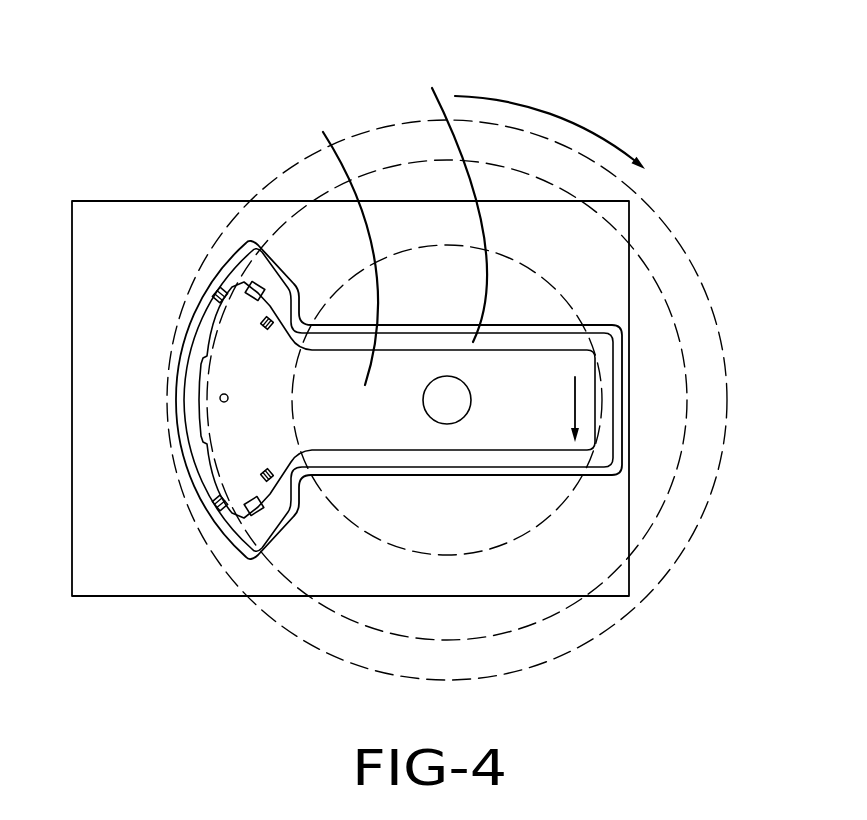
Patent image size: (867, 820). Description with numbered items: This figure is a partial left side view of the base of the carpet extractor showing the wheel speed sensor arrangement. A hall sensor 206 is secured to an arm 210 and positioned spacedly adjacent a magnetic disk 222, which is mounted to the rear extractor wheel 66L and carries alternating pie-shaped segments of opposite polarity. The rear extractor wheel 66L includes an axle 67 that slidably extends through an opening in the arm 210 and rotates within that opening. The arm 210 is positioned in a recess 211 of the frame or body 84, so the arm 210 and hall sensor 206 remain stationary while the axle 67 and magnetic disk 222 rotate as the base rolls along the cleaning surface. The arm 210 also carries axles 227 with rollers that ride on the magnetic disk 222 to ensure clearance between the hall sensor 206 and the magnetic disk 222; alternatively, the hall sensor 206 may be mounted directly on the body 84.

The frame or body 84 is at (86, 263).
The hall sensor 206 is at (221, 395).
The axles 227 is at (265, 283).
The arm 210 is at (327, 246).
The recess 211 is at (436, 203).
The axle 67 is at (447, 403).
The magnetic disk 222 is at (670, 473).
The rear extractor wheel 66L is at (723, 388).